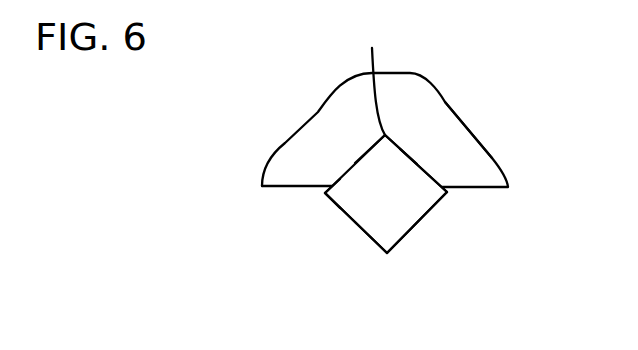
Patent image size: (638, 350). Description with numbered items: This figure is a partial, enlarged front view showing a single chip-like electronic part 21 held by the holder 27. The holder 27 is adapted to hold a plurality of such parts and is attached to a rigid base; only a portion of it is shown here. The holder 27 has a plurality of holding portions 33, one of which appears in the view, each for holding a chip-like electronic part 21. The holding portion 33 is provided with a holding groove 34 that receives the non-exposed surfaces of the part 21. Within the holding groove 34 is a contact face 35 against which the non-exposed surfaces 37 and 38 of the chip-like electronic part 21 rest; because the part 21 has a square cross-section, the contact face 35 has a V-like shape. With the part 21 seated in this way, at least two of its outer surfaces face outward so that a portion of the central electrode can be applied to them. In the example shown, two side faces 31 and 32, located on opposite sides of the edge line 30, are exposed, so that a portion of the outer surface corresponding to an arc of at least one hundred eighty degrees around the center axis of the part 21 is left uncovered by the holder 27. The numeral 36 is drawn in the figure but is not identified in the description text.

The chip-like electronic part 21 is at (331, 196).
The holder 27 is at (286, 139).
The edge line 30 is at (388, 253).
The side face 31 is at (368, 235).
The side face 32 is at (413, 229).
The holding portion 33 is at (437, 165).
The holding groove 34 is at (402, 152).
The contact face 35 is at (345, 175).
The central axis line 36 is at (365, 71).
The non-exposed surface 37 is at (415, 157).
The non-exposed surface 38 is at (357, 162).